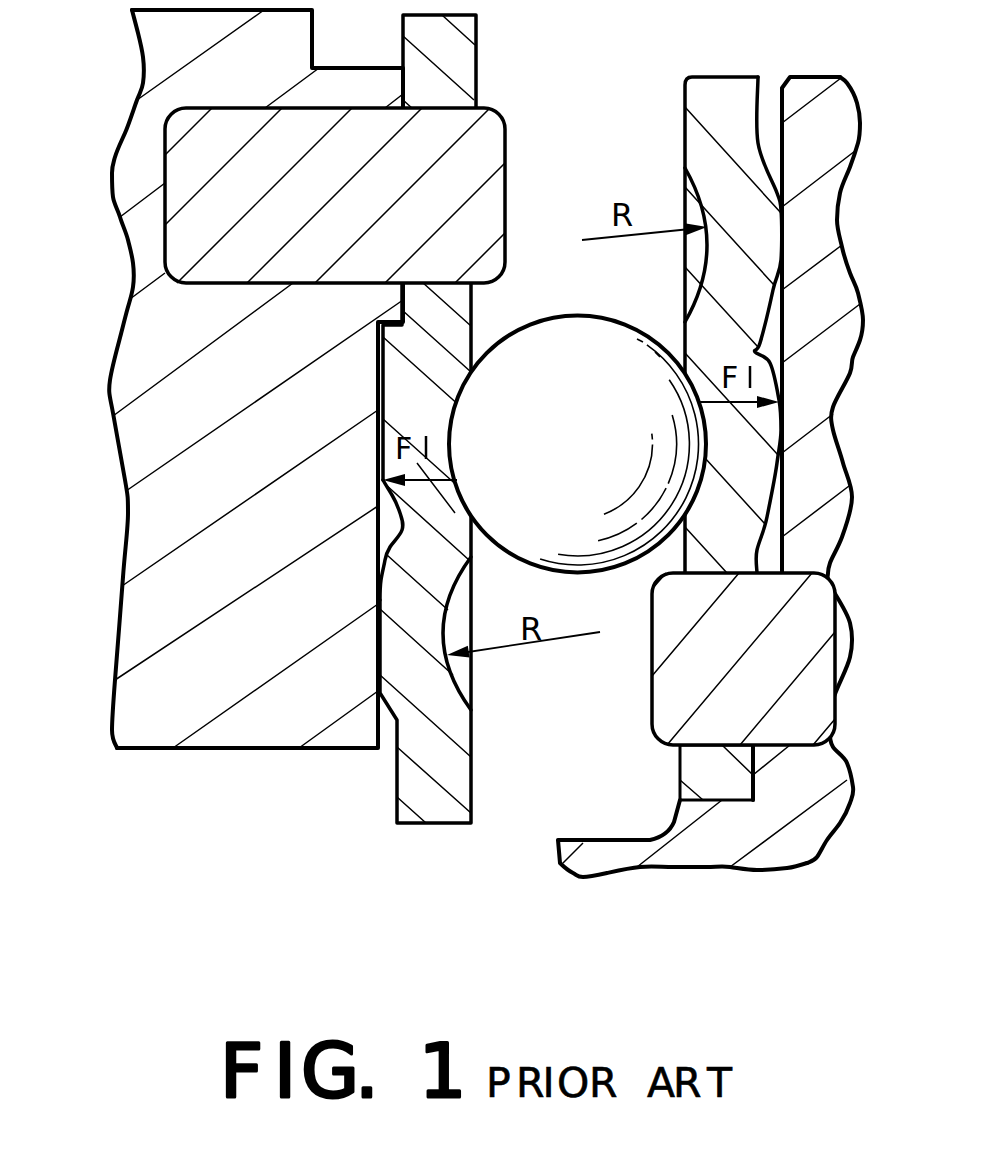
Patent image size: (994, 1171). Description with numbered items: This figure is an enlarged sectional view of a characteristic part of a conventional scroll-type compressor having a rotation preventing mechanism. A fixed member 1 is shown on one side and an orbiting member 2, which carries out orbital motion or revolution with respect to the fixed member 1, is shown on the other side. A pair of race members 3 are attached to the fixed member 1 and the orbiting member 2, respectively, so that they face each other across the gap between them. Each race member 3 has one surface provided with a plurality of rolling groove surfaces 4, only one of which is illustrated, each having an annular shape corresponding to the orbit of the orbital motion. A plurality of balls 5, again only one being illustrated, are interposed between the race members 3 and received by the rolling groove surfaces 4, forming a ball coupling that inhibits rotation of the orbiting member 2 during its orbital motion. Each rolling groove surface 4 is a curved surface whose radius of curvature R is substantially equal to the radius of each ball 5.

The fixed member 1 is at (185, 750).
The orbiting member 2 is at (780, 837).
The race member 3 is at (420, 827).
The rolling groove surface 4 is at (458, 687).
The ball 5 is at (594, 566).